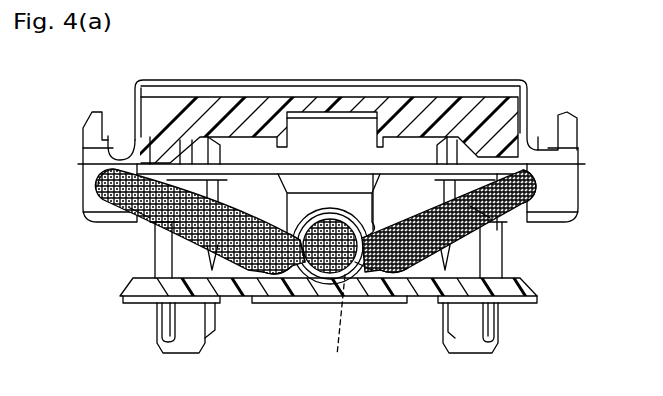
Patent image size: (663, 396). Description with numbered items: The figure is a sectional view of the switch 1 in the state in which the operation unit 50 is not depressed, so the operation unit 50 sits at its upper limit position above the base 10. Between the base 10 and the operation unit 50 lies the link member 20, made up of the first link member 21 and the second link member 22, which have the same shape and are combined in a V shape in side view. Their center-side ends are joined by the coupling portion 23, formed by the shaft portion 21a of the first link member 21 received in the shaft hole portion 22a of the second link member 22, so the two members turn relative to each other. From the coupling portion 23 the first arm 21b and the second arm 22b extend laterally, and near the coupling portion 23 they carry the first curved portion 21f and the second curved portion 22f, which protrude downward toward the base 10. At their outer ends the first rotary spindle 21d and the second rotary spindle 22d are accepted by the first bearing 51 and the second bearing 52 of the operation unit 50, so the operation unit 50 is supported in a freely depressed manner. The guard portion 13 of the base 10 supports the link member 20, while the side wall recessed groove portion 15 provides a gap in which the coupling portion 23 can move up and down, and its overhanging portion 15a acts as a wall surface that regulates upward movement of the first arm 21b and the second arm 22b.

The switch 1 is at (586, 62).
The base 10 is at (537, 293).
The guard portion 13 is at (368, 272).
The side wall recessed groove portion 15 is at (348, 206).
The overhanging portion 15a is at (331, 209).
The link member 20 is at (392, 220).
The first link member 21 is at (518, 214).
The shaft portion 21a is at (336, 329).
The first arm 21b is at (484, 209).
The first rotary spindle 21d is at (548, 185).
The first curved portion 21f is at (397, 273).
The second link member 22 is at (117, 227).
The shaft hole portion 22a is at (298, 236).
The second arm 22b is at (144, 214).
The second rotary spindle 22d is at (107, 183).
The second curved portion 22f is at (275, 273).
The coupling portion 23 is at (317, 282).
The operation unit 50 is at (490, 88).
The first bearing 51 is at (540, 150).
The second bearing 52 is at (127, 157).